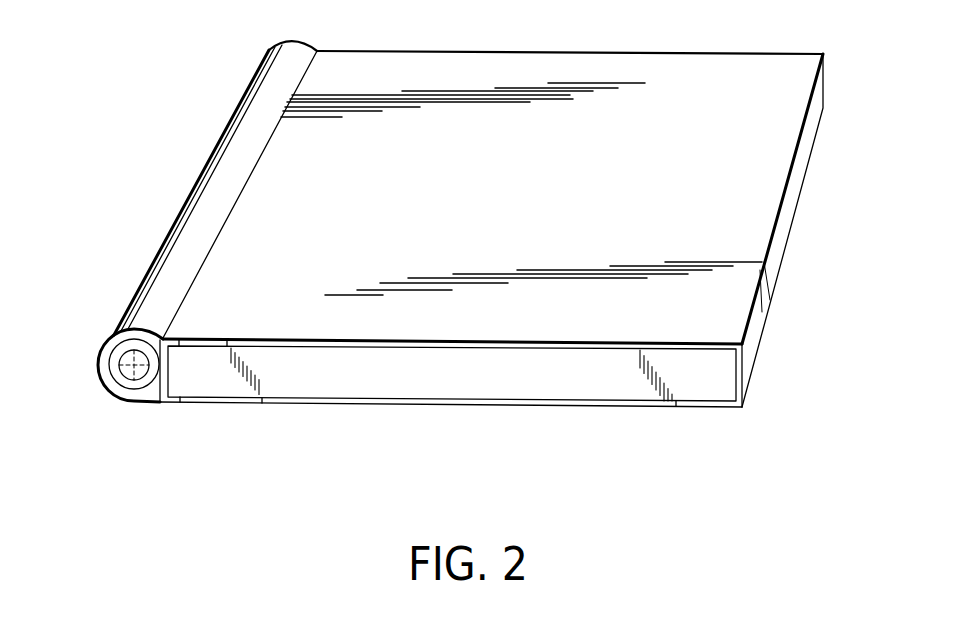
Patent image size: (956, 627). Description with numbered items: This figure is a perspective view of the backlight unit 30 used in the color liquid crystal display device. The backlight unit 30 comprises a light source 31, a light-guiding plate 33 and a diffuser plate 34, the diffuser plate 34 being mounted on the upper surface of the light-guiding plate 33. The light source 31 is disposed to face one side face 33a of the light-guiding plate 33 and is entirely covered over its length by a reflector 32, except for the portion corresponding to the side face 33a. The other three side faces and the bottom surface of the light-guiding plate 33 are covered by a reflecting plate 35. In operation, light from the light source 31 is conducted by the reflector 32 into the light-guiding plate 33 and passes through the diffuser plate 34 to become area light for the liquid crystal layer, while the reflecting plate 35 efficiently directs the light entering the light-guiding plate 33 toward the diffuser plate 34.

The backlight unit 30 is at (159, 176).
The light source 31 is at (120, 368).
The reflector 32 is at (152, 292).
The light-guiding plate 33 is at (403, 383).
The side face 33a is at (165, 372).
The diffuser plate 34 is at (695, 348).
The reflecting plate 35 is at (583, 402).